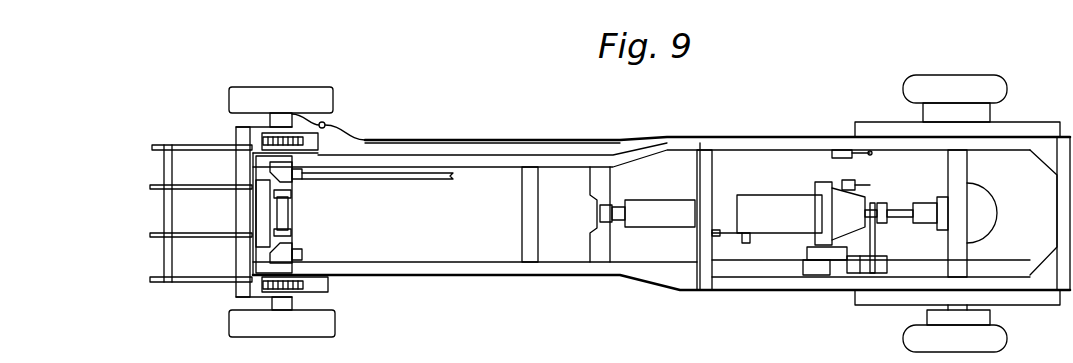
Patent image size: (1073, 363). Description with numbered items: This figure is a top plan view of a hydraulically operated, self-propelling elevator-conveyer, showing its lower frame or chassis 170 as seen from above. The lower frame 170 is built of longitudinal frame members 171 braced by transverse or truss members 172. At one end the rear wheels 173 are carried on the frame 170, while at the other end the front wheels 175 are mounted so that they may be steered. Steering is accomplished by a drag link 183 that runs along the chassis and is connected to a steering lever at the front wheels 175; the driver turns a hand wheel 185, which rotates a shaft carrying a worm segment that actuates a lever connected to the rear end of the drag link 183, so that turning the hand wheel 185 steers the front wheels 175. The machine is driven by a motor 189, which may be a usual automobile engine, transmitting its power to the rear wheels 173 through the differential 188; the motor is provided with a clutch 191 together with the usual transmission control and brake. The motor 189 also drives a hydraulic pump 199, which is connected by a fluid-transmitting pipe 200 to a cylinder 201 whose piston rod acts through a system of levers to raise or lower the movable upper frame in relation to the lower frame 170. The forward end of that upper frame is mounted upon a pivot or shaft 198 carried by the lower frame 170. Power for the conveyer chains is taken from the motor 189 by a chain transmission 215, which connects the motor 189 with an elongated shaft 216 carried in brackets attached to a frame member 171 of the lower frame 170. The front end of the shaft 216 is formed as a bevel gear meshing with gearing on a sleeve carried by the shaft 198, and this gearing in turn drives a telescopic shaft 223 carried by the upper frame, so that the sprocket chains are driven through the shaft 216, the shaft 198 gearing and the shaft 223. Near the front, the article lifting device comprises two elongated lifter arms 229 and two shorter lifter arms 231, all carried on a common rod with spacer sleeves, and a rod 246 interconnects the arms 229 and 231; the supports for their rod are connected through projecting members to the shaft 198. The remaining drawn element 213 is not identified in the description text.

The lower frame 170 is at (647, 277).
The longitudinal frame member 171 is at (756, 150).
The transverse truss member 172 is at (705, 174).
The rear wheel 173 is at (998, 85).
The front wheel 175 is at (322, 327).
The drag link 183 is at (493, 124).
The hand wheel 185 is at (840, 150).
The differential 188 is at (980, 212).
The motor 189 is at (778, 203).
The clutch 191 is at (817, 262).
The pivot shaft 198 is at (290, 213).
The hydraulic pump 199 is at (750, 242).
The fluid-transmitting pipe 200 is at (720, 231).
The cylinder 201 is at (653, 207).
The front axle post 213 is at (260, 282).
The chain transmission 215 is at (877, 245).
The elongated shaft 216 is at (683, 253).
The telescopic shaft 223 is at (418, 180).
The elongated lifter arm 229 is at (150, 186).
The shorter lifter arm 231 is at (198, 277).
The interconnecting rod 246 is at (167, 255).